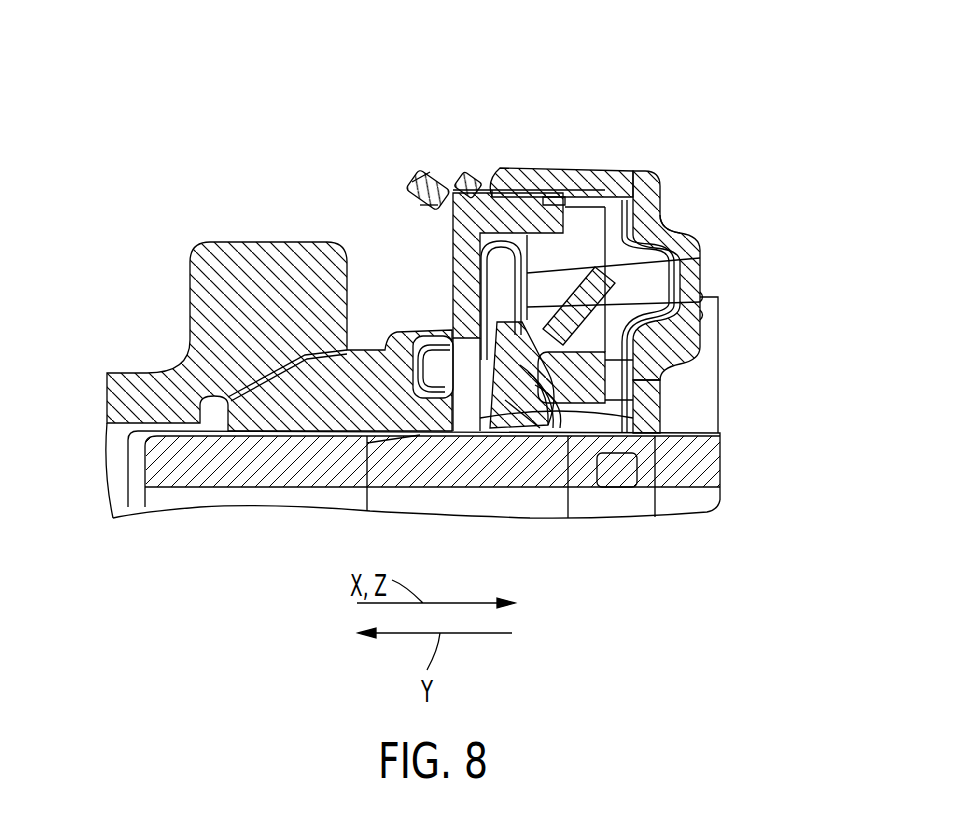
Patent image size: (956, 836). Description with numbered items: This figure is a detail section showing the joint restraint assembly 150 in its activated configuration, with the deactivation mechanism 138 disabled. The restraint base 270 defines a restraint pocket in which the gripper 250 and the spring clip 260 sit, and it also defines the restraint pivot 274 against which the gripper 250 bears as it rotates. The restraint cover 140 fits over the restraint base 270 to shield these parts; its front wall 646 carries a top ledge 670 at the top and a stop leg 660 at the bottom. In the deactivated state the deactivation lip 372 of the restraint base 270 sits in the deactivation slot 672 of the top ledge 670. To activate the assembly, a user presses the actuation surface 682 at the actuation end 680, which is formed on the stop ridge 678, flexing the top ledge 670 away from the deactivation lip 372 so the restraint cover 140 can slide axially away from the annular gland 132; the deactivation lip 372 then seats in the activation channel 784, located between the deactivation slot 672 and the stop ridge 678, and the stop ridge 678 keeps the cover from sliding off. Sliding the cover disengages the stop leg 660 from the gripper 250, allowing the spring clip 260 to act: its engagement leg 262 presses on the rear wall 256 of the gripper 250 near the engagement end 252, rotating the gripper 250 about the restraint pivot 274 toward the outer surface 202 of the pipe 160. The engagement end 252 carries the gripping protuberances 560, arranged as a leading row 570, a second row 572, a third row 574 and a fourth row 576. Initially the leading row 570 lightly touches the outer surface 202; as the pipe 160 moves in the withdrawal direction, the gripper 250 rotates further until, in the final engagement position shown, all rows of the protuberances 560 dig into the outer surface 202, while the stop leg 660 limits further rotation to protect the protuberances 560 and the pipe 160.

The joint restraint assembly 150 is at (736, 99).
The deactivation mechanism 138 is at (672, 187).
The restraint cover 140 is at (652, 212).
The front wall 646 is at (663, 232).
The engagement leg 262 is at (653, 262).
The gripper 250 is at (628, 316).
The restraint pivot 274 is at (645, 365).
The outer surface 202 is at (709, 433).
The pipe 160 is at (713, 478).
The stop leg 660 is at (600, 410).
The annular gland 132 is at (588, 212).
The top ledge 670 is at (548, 205).
The restraint base 270 is at (543, 210).
The deactivation slot 672 is at (492, 160).
The deactivation lip 372 is at (470, 210).
The activation channel 784 is at (458, 200).
The stop ridge 678 is at (440, 192).
The actuation end 680 is at (415, 173).
The actuation surface 682 is at (416, 194).
The spring clip 260 is at (450, 335).
The rear wall 256 is at (475, 345).
The gripping protuberances 560 is at (520, 370).
The engagement end 252 is at (525, 385).
The third row 574 is at (553, 400).
The second row 572 is at (580, 403).
The fourth row 576 is at (527, 398).
The leading row 570 is at (607, 403).